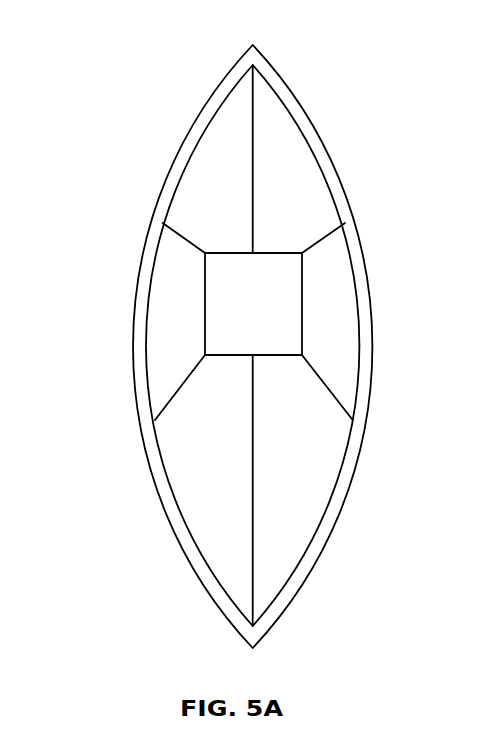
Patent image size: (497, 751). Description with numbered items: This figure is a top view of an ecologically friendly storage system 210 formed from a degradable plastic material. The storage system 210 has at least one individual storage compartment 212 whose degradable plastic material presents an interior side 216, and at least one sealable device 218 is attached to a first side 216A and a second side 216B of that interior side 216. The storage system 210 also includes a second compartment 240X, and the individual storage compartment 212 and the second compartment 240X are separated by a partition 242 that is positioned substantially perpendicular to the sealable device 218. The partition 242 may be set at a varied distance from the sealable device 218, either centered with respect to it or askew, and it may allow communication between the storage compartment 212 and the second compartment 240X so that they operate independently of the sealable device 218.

The storage system 210 is at (241, 346).
The second compartment 240X is at (212, 175).
The interior side 216 is at (308, 190).
The partition 242 is at (287, 298).
The sealable device 218 is at (120, 95).
The individual storage compartment 212 is at (288, 513).
The second side 216B is at (195, 397).
The first side 216A is at (312, 397).